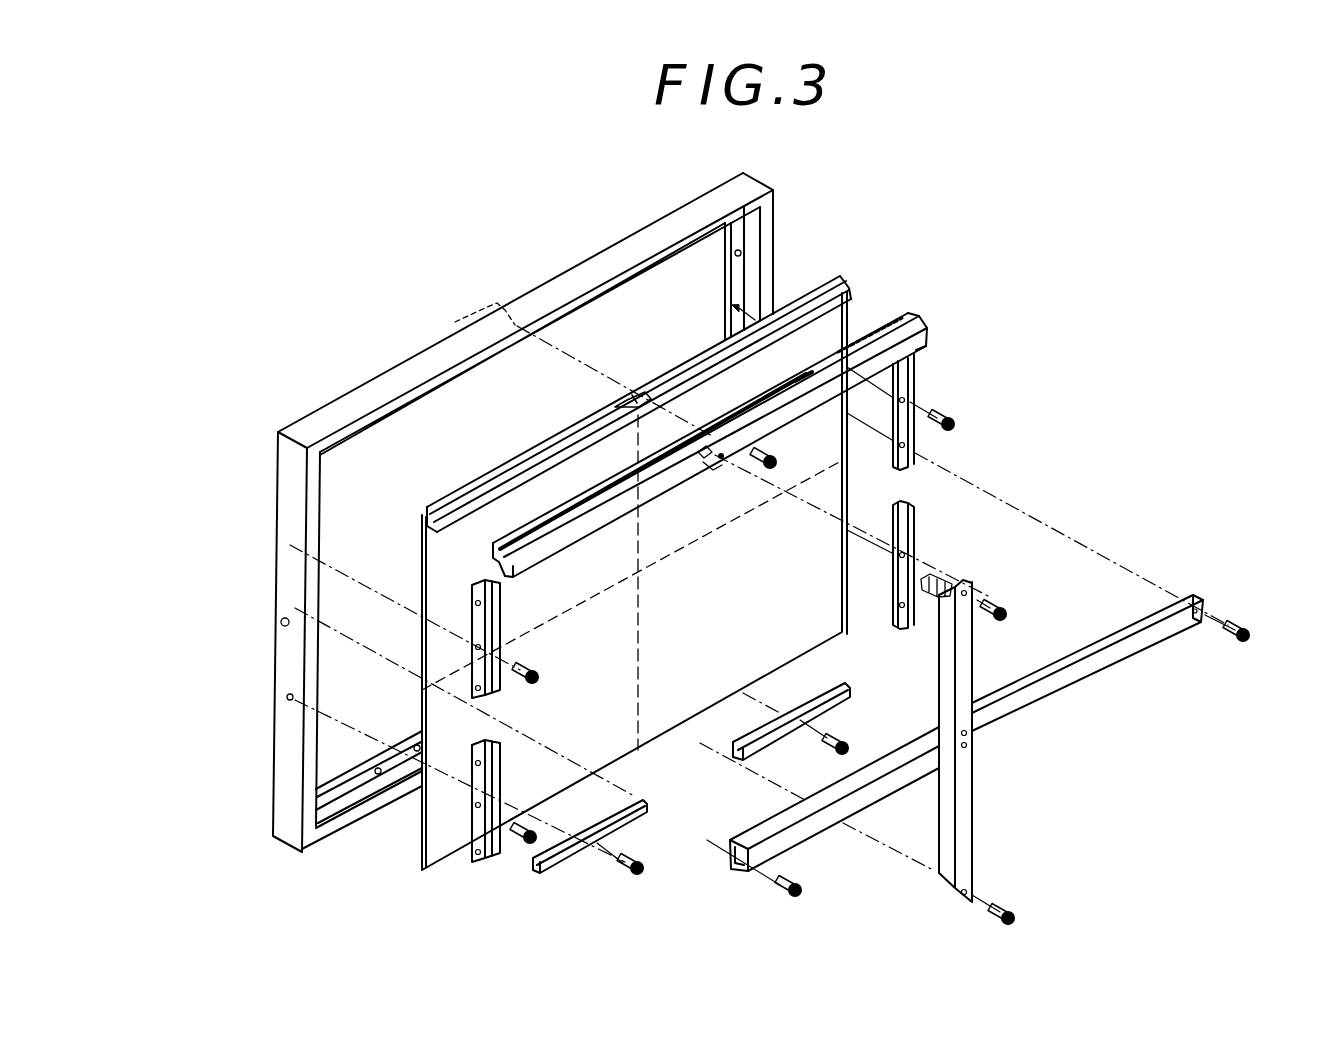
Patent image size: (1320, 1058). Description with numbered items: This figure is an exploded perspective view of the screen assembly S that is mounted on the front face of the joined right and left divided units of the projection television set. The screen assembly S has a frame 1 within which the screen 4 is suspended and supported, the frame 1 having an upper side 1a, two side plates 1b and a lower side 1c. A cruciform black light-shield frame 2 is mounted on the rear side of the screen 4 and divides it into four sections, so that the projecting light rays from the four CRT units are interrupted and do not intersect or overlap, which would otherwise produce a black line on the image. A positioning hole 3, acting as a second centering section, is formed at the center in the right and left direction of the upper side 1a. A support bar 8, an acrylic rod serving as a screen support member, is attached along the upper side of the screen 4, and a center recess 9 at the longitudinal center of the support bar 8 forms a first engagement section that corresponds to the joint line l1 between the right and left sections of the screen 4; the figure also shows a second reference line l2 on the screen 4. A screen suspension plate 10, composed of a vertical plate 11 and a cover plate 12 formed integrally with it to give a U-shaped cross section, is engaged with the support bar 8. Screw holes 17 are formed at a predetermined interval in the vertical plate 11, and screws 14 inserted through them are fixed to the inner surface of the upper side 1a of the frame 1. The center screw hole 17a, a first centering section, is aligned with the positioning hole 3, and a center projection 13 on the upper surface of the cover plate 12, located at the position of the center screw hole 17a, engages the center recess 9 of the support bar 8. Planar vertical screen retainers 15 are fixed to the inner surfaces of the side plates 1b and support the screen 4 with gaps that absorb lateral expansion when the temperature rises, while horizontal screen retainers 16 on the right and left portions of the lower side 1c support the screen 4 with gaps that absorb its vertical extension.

The frame 1 is at (526, 539).
The upper side 1a is at (517, 307).
The side plates 1b is at (768, 250).
The lower side 1c is at (350, 827).
The cruciform black light-shield frame 2 is at (1050, 652).
The positioning hole 3 is at (455, 322).
The screen 4 is at (432, 560).
The support bar 8 is at (692, 365).
The center recess 9 is at (617, 404).
The screen suspension plate 10 is at (930, 336).
The vertical plate 11 is at (797, 384).
The cover plate 12 is at (752, 456).
The center projection 13 is at (702, 450).
The screws 14 is at (778, 462).
The planar vertical screen retainers 15 is at (912, 437).
The horizontal screen retainers 16 is at (832, 705).
The screw holes 17 is at (598, 487).
The center screw hole 17a is at (710, 436).
The screen assembly S is at (965, 280).
The joint line l1 is at (638, 655).
The horizontal reference line l2 is at (712, 533).